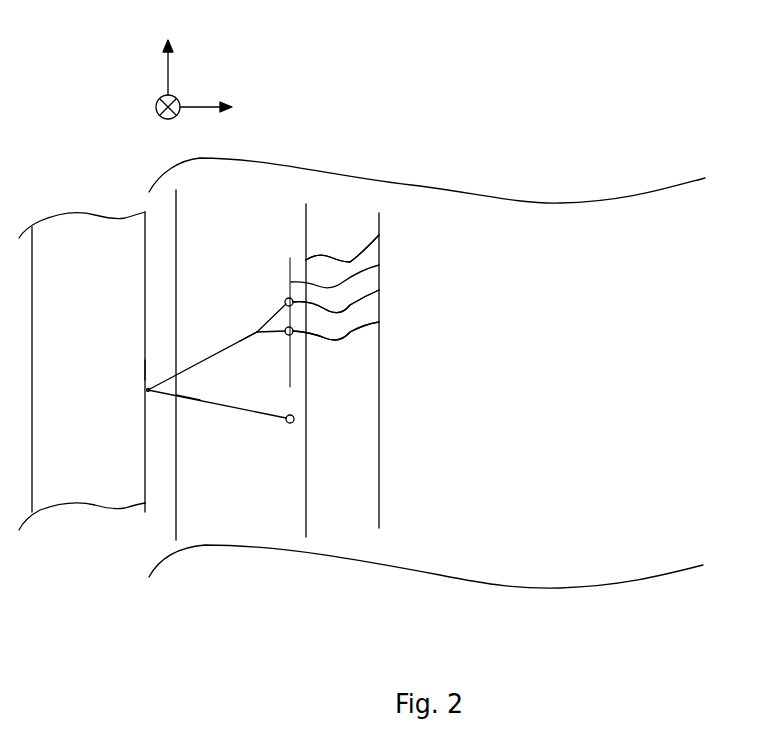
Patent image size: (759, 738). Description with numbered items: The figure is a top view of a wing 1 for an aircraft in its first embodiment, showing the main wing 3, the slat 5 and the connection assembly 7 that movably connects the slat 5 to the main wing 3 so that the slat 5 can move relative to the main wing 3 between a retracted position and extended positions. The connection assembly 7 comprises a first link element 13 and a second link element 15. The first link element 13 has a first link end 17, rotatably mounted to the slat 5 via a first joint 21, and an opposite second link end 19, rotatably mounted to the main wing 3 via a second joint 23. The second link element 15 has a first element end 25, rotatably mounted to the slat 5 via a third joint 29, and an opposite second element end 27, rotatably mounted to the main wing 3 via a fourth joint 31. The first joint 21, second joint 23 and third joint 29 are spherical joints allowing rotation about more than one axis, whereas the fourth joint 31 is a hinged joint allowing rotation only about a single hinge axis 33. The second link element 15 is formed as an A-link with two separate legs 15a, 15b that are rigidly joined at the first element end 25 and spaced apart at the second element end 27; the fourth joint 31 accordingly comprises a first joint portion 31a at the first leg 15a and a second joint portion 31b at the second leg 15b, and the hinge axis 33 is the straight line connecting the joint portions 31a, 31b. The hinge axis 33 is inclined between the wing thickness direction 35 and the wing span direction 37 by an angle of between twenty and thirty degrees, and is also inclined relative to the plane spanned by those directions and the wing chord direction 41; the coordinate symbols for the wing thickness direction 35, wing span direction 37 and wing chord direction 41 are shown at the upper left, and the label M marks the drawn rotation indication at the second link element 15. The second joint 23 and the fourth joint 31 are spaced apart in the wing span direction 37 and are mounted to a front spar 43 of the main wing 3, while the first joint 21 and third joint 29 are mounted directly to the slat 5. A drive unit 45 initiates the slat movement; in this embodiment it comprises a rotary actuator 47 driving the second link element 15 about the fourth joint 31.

The wing 1 is at (380, 90).
The main wing 3 is at (532, 380).
The slat 5 is at (81, 380).
The connection assembly 7 is at (212, 332).
The first link element 13 is at (203, 402).
The second link element 15 is at (212, 357).
The first leg 15a is at (285, 301).
The second leg 15b is at (284, 334).
The first link end 17 is at (162, 390).
The second link end 19 is at (275, 420).
The first joint 21 is at (145, 393).
The second joint 23 is at (294, 420).
The first element end 25 is at (162, 390).
The second element end 27 is at (262, 323).
The third joint 29 is at (148, 367).
The fourth joint 31 is at (379, 290).
The first joint portion 31a is at (336, 301).
The second joint portion 31b is at (379, 322).
The hinge axis 33 is at (379, 265).
The wing thickness direction 35 is at (158, 119).
The wing span direction 37 is at (169, 55).
The wing chord direction 41 is at (223, 105).
The front spar 43 is at (360, 396).
The drive unit 45 is at (379, 235).
The rotary actuator 47 is at (342, 248).
The moment / rotation direction M is at (298, 266).